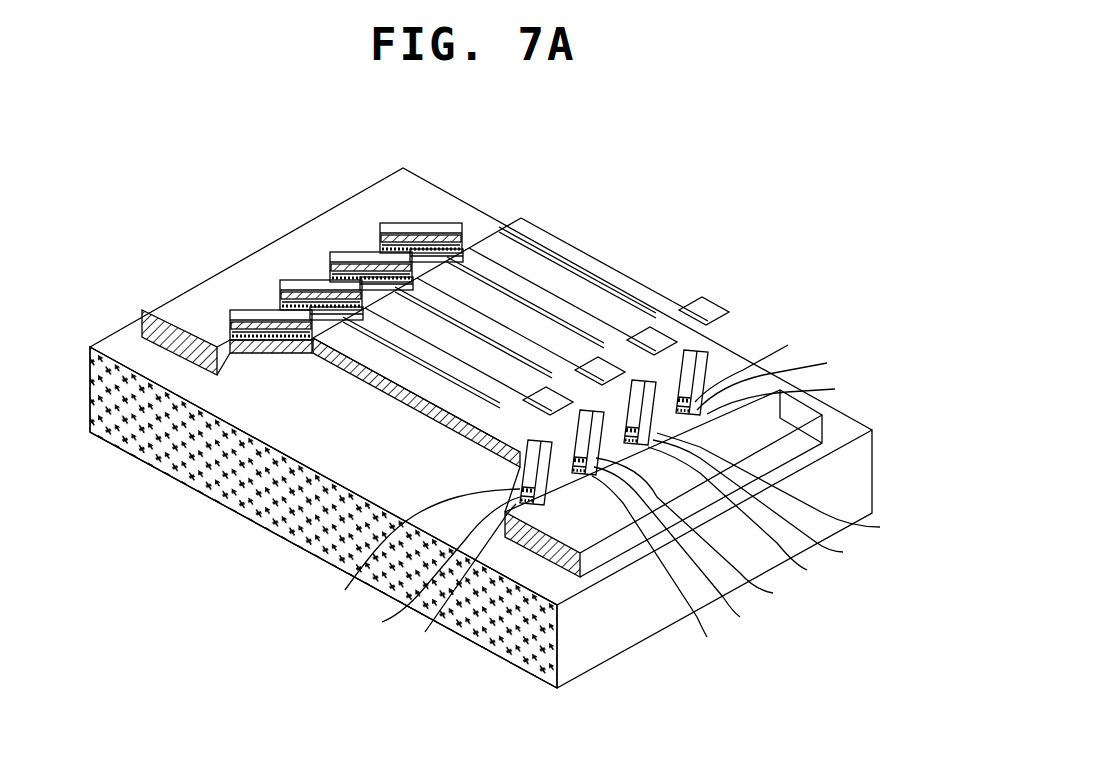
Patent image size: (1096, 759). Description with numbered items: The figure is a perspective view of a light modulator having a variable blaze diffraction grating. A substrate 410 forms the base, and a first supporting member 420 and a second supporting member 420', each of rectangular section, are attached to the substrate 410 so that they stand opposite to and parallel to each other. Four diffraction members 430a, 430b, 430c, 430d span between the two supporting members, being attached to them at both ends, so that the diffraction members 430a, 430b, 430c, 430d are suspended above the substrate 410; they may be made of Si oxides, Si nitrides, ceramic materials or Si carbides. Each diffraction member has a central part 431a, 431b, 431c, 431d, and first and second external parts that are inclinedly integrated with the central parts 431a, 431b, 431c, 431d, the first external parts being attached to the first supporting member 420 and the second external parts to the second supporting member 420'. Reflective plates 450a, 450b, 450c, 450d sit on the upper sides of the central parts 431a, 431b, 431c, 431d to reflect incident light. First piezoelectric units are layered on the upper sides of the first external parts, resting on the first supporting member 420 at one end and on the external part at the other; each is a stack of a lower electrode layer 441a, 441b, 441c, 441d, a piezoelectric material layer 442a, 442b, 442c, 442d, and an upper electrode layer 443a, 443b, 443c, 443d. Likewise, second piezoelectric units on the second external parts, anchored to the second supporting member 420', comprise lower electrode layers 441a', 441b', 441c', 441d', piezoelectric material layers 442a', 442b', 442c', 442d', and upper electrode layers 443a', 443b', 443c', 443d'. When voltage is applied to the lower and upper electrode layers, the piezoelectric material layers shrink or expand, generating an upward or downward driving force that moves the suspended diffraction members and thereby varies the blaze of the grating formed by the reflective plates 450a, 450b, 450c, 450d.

The substrate 410 is at (583, 657).
The first supporting member 420 is at (275, 410).
The second supporting member 420' is at (663, 541).
The diffraction member 430a is at (555, 258).
The diffraction member 430b is at (572, 275).
The diffraction member 430c is at (633, 282).
The diffraction member 430d is at (633, 320).
The central part 431a is at (455, 262).
The central part 431b is at (490, 290).
The central part 431c is at (530, 300).
The central part 431d is at (545, 290).
The lower electrode layer 441a is at (227, 304).
The piezoelectric material layer 442a is at (206, 283).
The upper electrode layer 443a is at (232, 283).
The lower electrode layer 441b is at (291, 267).
The piezoelectric material layer 442b is at (270, 246).
The upper electrode layer 443b is at (297, 247).
The lower electrode layer 441c is at (358, 232).
The piezoelectric material layer 442c is at (336, 211).
The upper electrode layer 443c is at (362, 211).
The lower electrode layer 441d is at (402, 193).
The piezoelectric material layer 442d is at (417, 178).
The upper electrode layer 443d is at (424, 177).
The reflective plate 450a is at (717, 407).
The reflective plate 450b is at (717, 363).
The reflective plate 450c is at (683, 337).
The reflective plate 450d is at (600, 348).
The lower electrode layer 441a' is at (430, 570).
The piezoelectric material layer 442a' is at (457, 578).
The upper electrode layer 443a' is at (419, 552).
The lower electrode layer 441b' is at (675, 564).
The piezoelectric material layer 442b' is at (694, 549).
The upper electrode layer 443b' is at (710, 533).
The lower electrode layer 441c' is at (753, 516).
The piezoelectric material layer 442c' is at (774, 502).
The upper electrode layer 443c' is at (791, 487).
The lower electrode layer 441d' is at (799, 396).
The piezoelectric material layer 442d' is at (789, 381).
The upper electrode layer 443d' is at (768, 367).